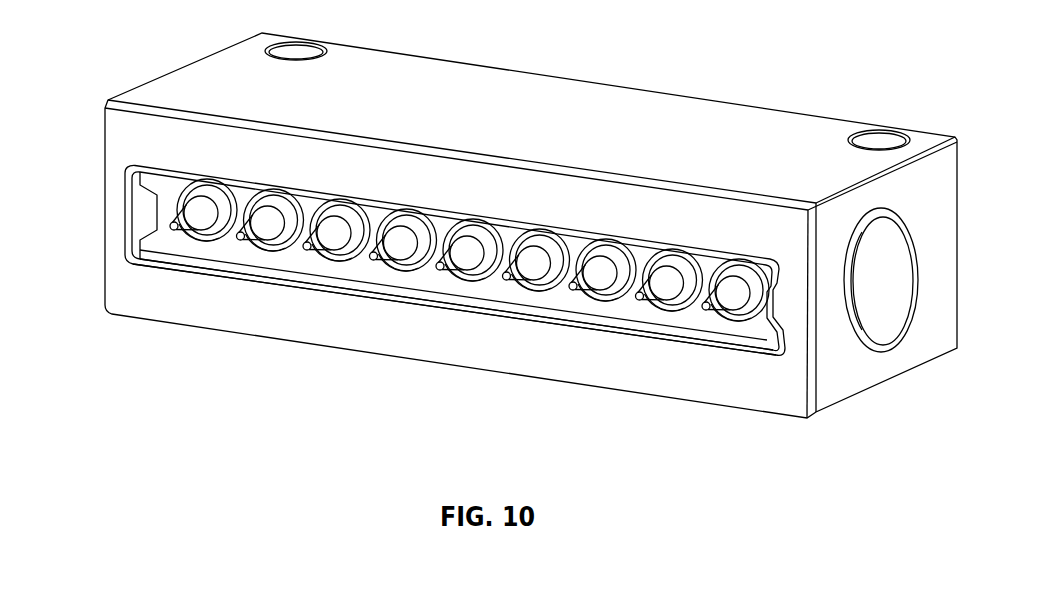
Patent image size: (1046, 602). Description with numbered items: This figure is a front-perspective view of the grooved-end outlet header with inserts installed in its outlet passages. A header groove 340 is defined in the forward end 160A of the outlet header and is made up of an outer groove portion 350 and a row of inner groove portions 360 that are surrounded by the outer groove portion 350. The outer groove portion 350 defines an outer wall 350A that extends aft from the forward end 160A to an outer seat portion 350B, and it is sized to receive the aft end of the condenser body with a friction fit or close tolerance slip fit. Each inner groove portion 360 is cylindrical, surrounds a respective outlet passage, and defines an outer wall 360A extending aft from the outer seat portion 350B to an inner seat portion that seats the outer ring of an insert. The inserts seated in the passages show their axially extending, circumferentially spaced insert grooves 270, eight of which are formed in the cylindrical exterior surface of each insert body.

The forward end of the outlet header 160A is at (120, 140).
The outer groove portion 350 is at (243, 193).
The inner groove portions 360 is at (383, 225).
The header groove 340 is at (576, 242).
The insert grooves 270 is at (720, 273).
The outer wall of the outer groove portion 350A is at (185, 270).
The outer seat portion 350B is at (437, 280).
The outer wall of the inner groove portion 360A is at (547, 270).